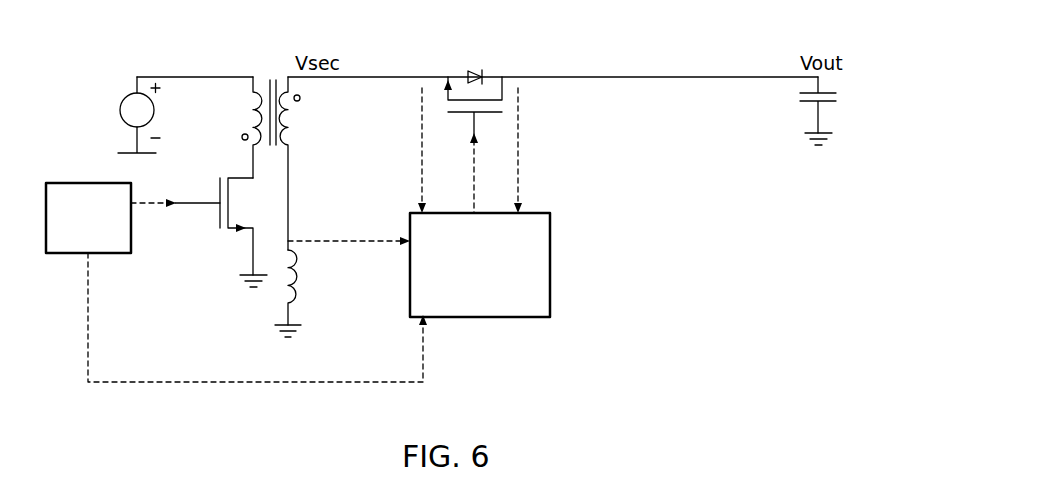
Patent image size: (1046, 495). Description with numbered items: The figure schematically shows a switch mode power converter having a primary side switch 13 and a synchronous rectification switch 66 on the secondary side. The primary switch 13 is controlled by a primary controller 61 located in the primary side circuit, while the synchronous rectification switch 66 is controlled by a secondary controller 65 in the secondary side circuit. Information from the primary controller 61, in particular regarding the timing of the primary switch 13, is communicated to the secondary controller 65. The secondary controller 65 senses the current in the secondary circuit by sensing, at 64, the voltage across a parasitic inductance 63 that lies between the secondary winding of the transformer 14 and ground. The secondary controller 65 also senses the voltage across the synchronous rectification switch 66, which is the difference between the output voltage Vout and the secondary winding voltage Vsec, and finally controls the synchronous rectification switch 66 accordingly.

The primary side switch 13 is at (219, 204).
The transformer 14 is at (270, 90).
The primary controller 61 is at (111, 218).
The parasitic inductance 63 is at (292, 258).
The sensing point 64 is at (330, 240).
The secondary controller 65 is at (480, 202).
The synchronous rectification switch 66 is at (448, 77).